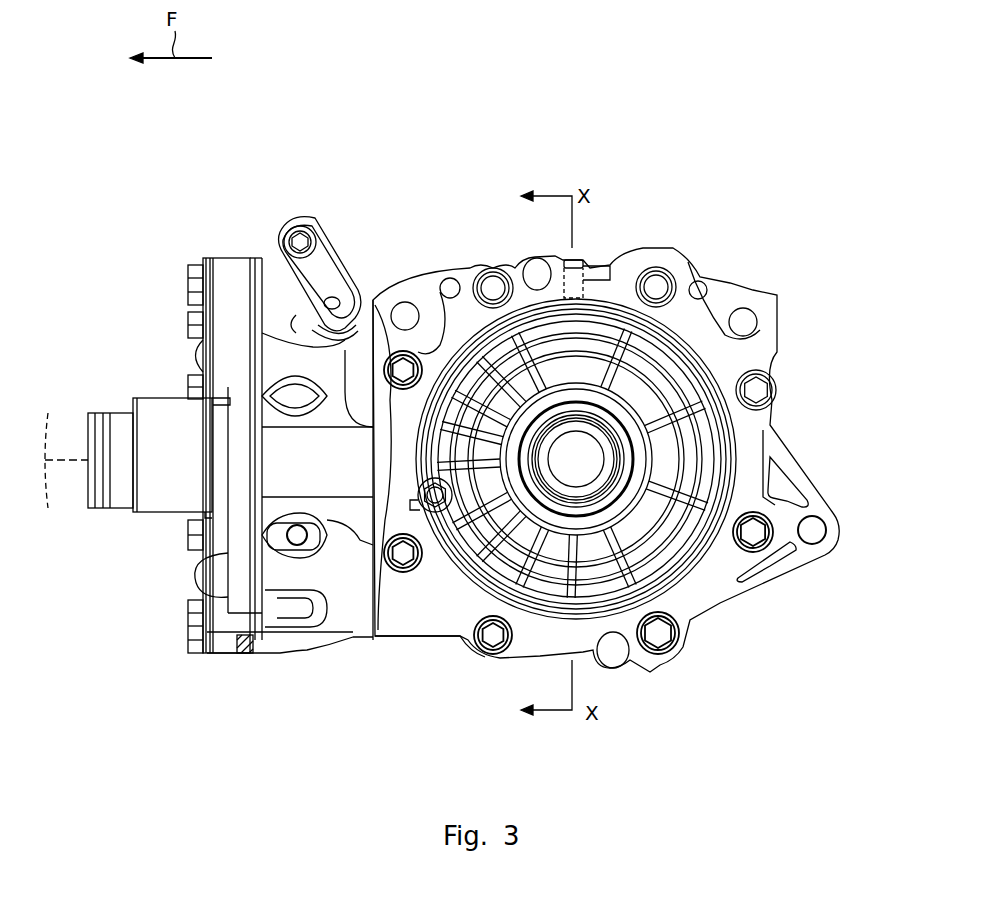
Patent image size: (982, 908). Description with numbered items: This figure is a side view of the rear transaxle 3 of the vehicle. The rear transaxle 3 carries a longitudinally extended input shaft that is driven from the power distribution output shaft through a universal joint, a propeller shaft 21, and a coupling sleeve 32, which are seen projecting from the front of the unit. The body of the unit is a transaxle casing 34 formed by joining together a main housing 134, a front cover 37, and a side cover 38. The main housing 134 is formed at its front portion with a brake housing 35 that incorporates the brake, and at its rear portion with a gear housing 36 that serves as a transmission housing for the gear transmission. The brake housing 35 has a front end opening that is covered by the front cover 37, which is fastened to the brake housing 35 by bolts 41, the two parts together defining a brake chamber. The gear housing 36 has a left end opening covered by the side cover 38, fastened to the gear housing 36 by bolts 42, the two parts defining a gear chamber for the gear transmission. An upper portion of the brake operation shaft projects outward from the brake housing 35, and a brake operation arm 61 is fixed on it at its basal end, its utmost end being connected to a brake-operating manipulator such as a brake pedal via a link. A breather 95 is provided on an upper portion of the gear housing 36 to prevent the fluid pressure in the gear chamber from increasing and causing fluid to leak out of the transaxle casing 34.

The rear transaxle 3 is at (741, 148).
The propeller shaft 21 is at (80, 410).
The coupling sleeve 32 is at (165, 396).
The transaxle casing 34 is at (728, 285).
The brake housing 35 is at (288, 658).
The gear housing 36 is at (408, 642).
The front cover 37 is at (226, 255).
The side cover 38 is at (710, 590).
The bolts 41 is at (186, 281).
The bolts 42 is at (768, 396).
The brake operation arm 61 is at (343, 248).
The breather 95 is at (584, 260).
The main housing 134 is at (374, 640).